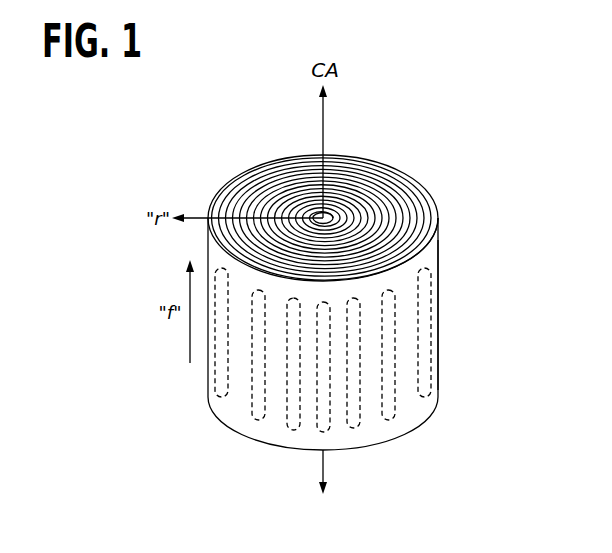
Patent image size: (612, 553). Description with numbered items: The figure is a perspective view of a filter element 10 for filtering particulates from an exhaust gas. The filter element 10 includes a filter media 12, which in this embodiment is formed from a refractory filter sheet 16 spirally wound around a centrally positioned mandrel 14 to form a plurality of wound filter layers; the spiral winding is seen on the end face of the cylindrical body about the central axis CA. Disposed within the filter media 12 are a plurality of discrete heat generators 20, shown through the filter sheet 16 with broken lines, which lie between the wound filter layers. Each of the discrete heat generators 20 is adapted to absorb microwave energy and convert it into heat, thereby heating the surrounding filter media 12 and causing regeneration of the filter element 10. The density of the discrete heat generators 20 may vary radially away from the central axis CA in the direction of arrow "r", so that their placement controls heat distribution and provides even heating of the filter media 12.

The filter element 10 is at (282, 134).
The filter media 12 is at (428, 222).
The mandrel 14 is at (333, 212).
The refractory filter sheet 16 is at (437, 322).
The discrete heat generators 20 is at (425, 397).